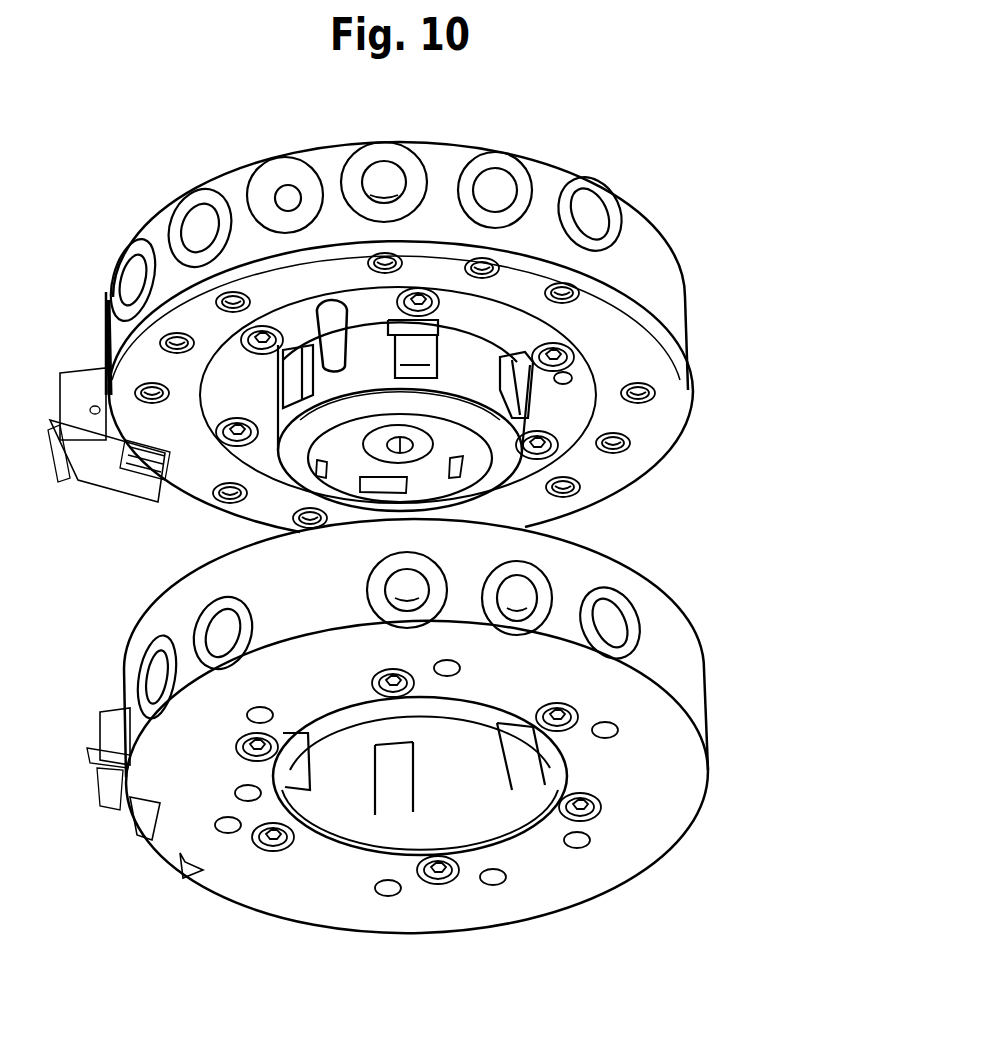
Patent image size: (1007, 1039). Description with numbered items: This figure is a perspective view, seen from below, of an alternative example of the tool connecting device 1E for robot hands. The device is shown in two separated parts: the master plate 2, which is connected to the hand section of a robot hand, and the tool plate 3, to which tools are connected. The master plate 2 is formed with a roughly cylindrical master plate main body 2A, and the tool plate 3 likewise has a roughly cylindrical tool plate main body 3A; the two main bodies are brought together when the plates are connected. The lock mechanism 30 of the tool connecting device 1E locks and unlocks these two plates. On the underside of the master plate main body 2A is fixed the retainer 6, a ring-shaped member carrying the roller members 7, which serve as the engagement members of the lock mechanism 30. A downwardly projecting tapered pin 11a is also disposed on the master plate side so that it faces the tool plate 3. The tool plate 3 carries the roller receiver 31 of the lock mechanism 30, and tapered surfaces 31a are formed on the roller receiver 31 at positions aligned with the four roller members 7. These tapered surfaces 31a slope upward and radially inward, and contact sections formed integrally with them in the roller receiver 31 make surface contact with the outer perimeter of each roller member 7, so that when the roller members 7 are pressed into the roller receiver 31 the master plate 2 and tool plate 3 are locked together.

The tool connecting device 1E is at (815, 466).
The master plate 2 is at (139, 168).
The master plate main body 2A is at (658, 246).
The tool plate 3 is at (679, 914).
The tool plate main body 3A is at (694, 680).
The retainer 6 is at (293, 478).
The roller members 7 is at (422, 346).
The tapered pin 11a is at (326, 328).
The lock mechanism 30 is at (656, 514).
The roller receiver 31 is at (470, 795).
The tapered surfaces 31a is at (380, 790).